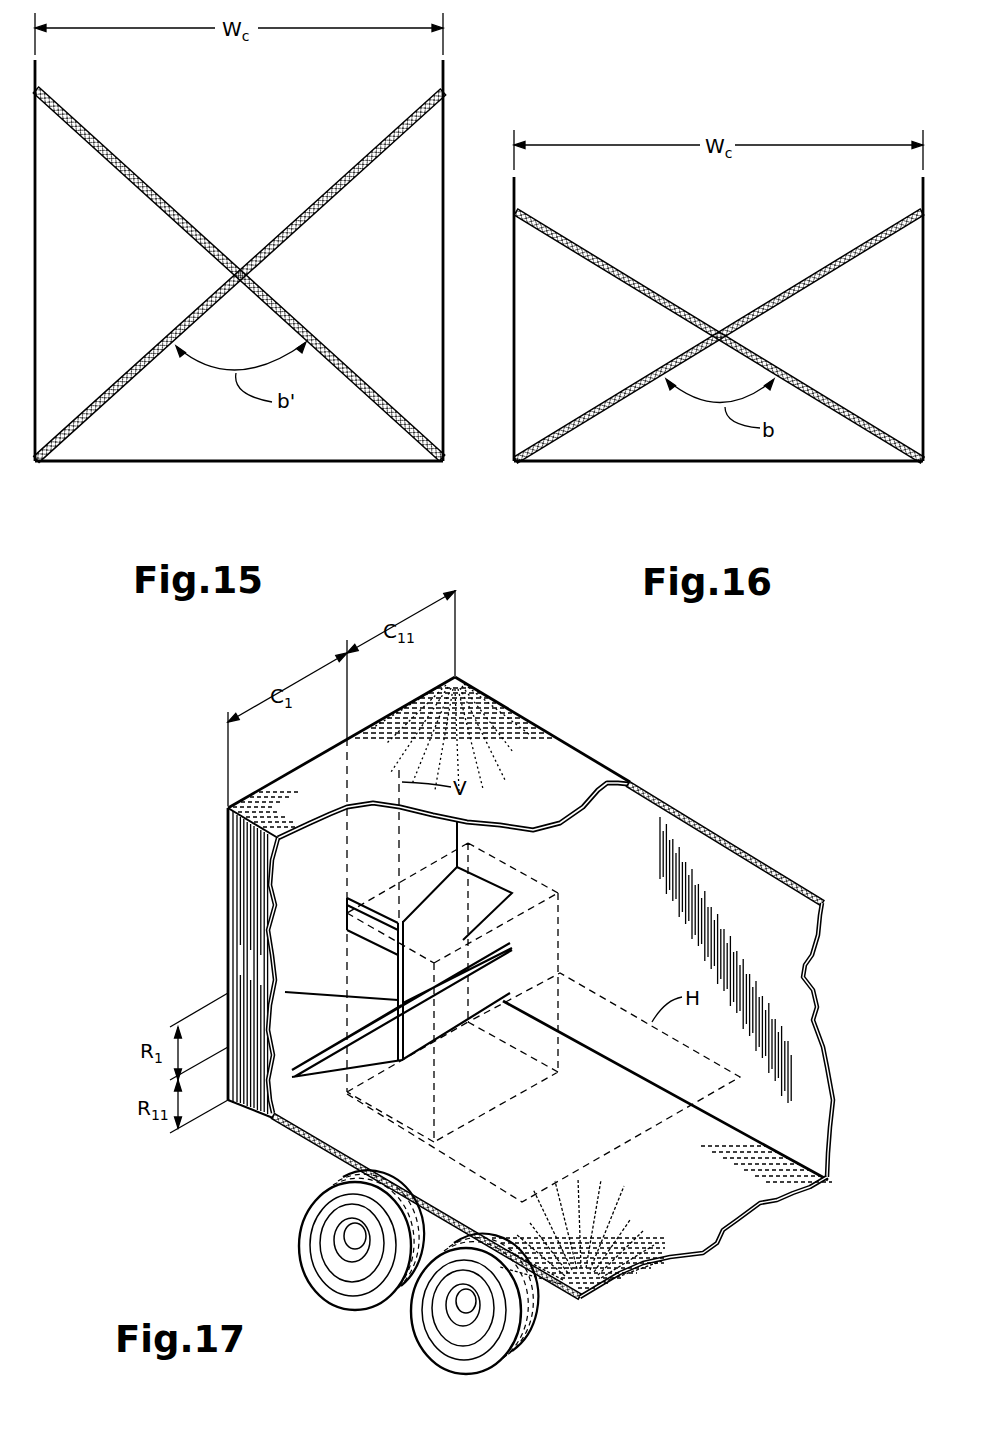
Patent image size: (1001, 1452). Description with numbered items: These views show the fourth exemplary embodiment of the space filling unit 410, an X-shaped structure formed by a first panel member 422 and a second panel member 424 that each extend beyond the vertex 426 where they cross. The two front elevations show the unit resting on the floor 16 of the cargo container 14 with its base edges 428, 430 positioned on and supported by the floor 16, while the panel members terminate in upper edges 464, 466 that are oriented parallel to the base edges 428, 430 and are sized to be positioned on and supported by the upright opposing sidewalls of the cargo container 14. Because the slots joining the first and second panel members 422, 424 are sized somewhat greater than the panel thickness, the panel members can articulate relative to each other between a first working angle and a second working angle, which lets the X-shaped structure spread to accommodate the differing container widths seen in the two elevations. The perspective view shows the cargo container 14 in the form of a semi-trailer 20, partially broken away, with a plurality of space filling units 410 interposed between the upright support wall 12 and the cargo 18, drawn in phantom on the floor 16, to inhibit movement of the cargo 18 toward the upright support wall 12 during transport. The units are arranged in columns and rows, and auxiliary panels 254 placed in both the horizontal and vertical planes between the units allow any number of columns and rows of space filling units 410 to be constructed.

In FIG. 17, the upright support wall 12 is at (348, 840).
In FIG. 15, the cargo container 14 is at (452, 106).
In FIG. 16, the cargo container 14 is at (508, 187).
In FIG. 17, the cargo container 14 is at (563, 765).
In FIG. 15, the floor 16 is at (173, 460).
In FIG. 16, the floor 16 is at (630, 460).
In FIG. 17, the floor 16 is at (740, 1218).
In FIG. 17, the cargo 18 is at (560, 912).
In FIG. 17, the semi-trailer 20 is at (608, 777).
In FIG. 17, the auxiliary panel 254 is at (396, 925).
In FIG. 17, the space filling unit 410 is at (483, 897).
In FIG. 15, the first panel member 422 is at (337, 187).
In FIG. 16, the first panel member 422 is at (835, 263).
In FIG. 15, the second panel member 424 is at (107, 148).
In FIG. 16, the second panel member 424 is at (580, 248).
In FIG. 15, the vertex 426 is at (242, 283).
In FIG. 15, the base edge 428 is at (38, 464).
In FIG. 16, the base edge 428 is at (518, 465).
In FIG. 15, the base edge 430 is at (427, 467).
In FIG. 16, the base edge 430 is at (903, 465).
In FIG. 15, the upper edge 464 is at (441, 90).
In FIG. 16, the upper edge 464 is at (920, 206).
In FIG. 15, the upper edge 466 is at (38, 84).
In FIG. 16, the upper edge 466 is at (517, 206).